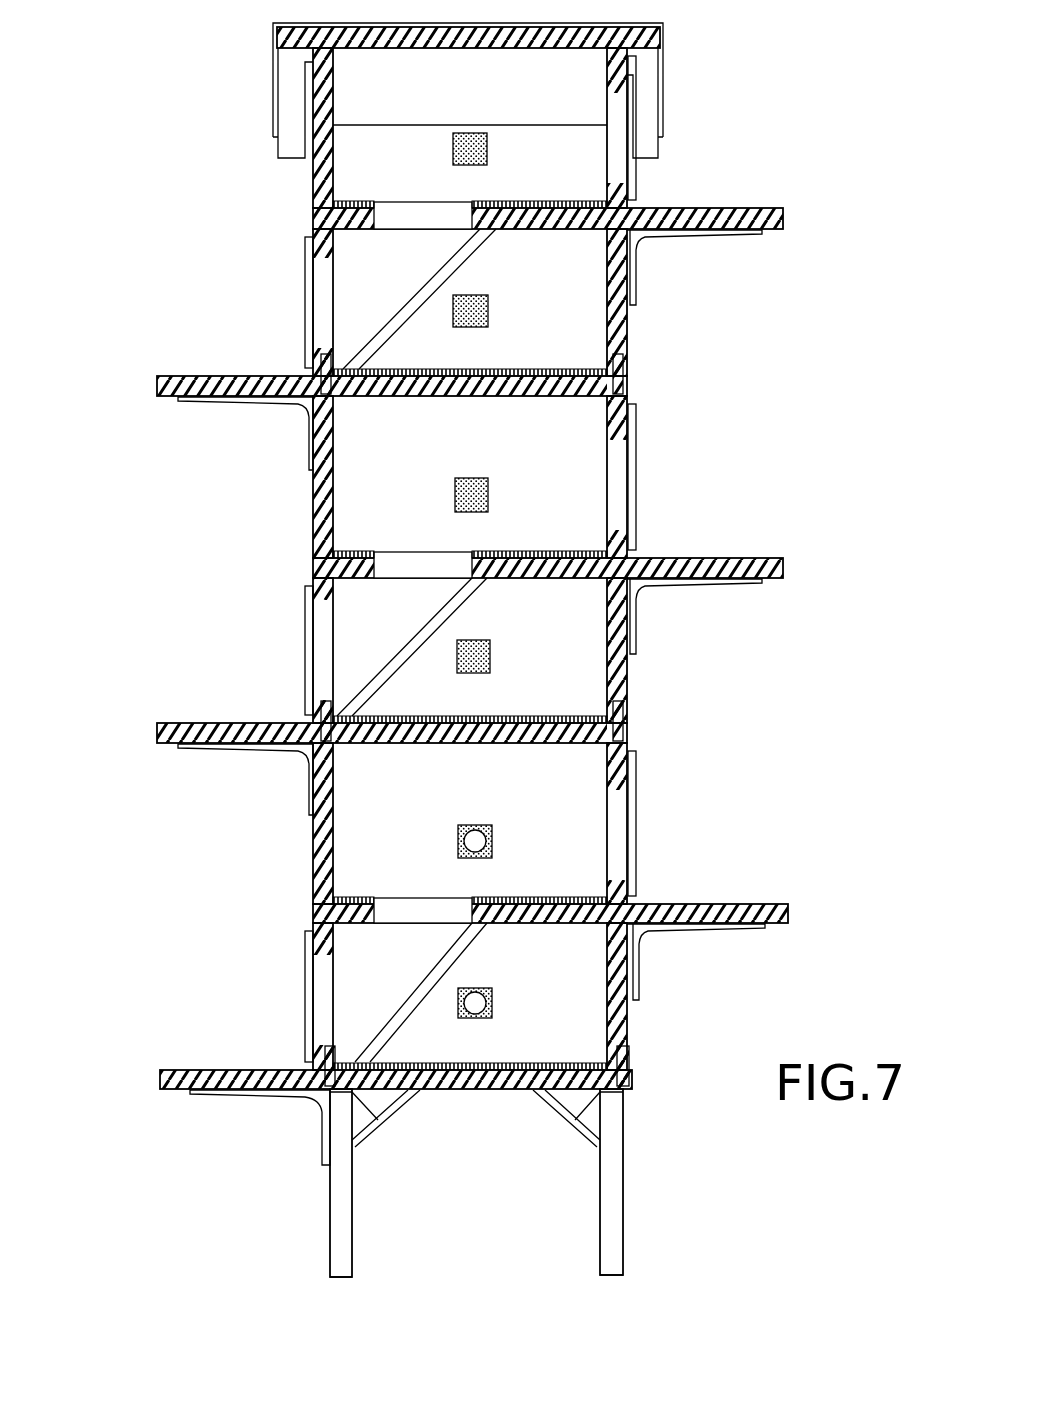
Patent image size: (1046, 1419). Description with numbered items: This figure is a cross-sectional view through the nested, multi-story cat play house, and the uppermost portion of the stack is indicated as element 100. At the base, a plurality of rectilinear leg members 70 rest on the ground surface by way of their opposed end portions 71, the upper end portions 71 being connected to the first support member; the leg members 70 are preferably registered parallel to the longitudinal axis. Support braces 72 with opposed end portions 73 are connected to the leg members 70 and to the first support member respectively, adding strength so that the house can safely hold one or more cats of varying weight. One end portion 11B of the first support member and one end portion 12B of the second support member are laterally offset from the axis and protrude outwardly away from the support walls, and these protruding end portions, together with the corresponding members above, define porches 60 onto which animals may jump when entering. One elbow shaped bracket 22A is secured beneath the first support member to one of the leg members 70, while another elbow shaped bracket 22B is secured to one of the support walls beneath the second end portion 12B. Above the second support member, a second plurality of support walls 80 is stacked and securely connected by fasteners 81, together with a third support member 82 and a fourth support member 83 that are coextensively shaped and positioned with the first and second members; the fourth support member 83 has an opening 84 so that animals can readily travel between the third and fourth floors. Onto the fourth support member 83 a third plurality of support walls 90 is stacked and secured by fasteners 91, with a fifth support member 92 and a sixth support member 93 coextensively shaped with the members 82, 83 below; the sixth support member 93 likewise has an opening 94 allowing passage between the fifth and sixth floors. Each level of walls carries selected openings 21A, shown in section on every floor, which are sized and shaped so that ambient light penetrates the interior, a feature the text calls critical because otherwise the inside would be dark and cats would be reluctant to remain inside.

The top unit 100 is at (313, 192).
The selected ones of the openings 21A is at (480, 165).
The porches 60 is at (735, 208).
The third plurality of support walls 90 is at (627, 330).
The fasteners 91 is at (320, 374).
The fifth support member 92 is at (545, 396).
The sixth support member 93 is at (558, 229).
The opening 94 is at (395, 229).
The second plurality of support walls 80 is at (627, 670).
The fasteners 81 is at (320, 721).
The third support member 82 is at (565, 924).
The fourth support member 83 is at (558, 579).
The opening 84 is at (405, 579).
The end portion of the second support member 12B is at (790, 912).
The elbow shaped bracket 22B is at (650, 933).
The end portion of the first support member 11B is at (160, 1080).
The elbow shaped bracket 22A is at (310, 1103).
The rectilinear leg members 70 is at (625, 1165).
The end portions of the leg members 71 is at (628, 1090).
The support braces 72 is at (388, 1110).
The end portions of the support braces 73 is at (533, 1090).